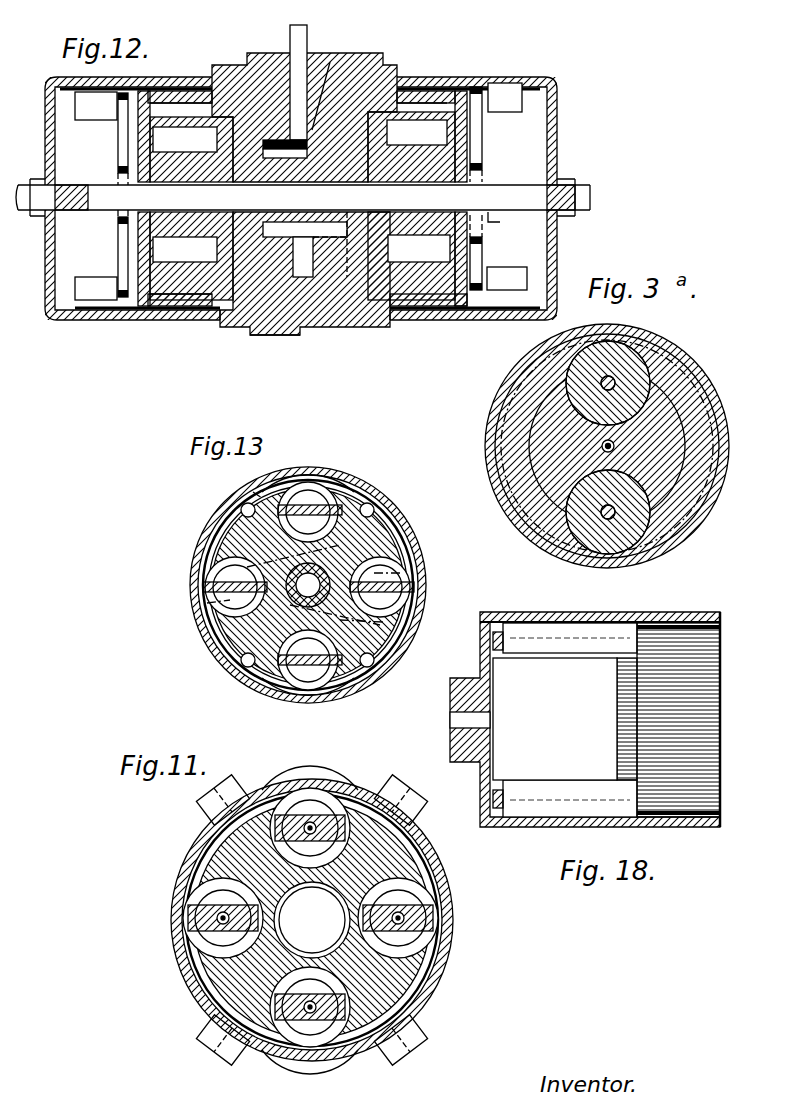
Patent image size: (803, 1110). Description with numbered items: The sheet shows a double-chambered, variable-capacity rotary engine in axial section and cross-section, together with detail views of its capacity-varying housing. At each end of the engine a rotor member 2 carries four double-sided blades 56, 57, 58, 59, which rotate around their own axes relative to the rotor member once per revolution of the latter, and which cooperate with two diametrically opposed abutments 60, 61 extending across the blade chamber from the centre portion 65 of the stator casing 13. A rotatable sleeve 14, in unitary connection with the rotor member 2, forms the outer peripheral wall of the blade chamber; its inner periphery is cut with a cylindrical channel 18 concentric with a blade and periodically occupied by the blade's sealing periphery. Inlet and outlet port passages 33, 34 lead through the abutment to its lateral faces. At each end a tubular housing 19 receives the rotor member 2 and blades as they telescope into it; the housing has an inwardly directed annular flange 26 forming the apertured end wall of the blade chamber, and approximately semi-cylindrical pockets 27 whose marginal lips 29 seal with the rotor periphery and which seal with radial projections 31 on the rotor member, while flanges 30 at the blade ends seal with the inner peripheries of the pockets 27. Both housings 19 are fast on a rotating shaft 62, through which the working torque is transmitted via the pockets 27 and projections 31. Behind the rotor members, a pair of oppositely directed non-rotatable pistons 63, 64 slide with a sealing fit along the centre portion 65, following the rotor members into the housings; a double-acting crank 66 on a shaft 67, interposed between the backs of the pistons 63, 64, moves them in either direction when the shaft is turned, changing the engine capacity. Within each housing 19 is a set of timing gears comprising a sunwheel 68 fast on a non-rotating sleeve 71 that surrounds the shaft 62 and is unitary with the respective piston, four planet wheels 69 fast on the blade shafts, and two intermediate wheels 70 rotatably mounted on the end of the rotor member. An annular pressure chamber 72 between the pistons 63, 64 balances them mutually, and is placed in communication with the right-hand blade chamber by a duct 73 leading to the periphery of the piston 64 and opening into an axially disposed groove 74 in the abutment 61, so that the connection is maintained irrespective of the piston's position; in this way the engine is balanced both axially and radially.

In FIG. 12, the rotor member 2 is at (166, 160).
In FIG. 3A, the rotor member 2 is at (660, 413).
In FIG. 11, the rotor member 2 is at (380, 970).
In FIG. 12, the stator casing 13 is at (373, 64).
In FIG. 13, the stator casing 13 is at (412, 537).
In FIG. 11, the stator casing 13 is at (450, 902).
In FIG. 12, the rotatable sleeve 14 is at (168, 83).
In FIG. 13, the rotatable sleeve 14 is at (423, 557).
In FIG. 18, the rotatable sleeve 14 is at (687, 612).
In FIG. 11, the rotatable sleeve 14 is at (438, 867).
In FIG. 18, the channel 18 is at (718, 615).
In FIG. 12, the tubular housing 19 is at (95, 82).
In FIG. 18, the tubular housing 19 is at (528, 612).
In FIG. 3A, the annular flange 26 is at (672, 367).
In FIG. 13, the annular flange 26 is at (238, 525).
In FIG. 18, the annular flange 26 is at (630, 725).
In FIG. 12, the pocket 27 is at (87, 108).
In FIG. 18, the pocket 27 is at (565, 633).
In FIG. 18, the marginal lip 29 is at (558, 655).
In FIG. 3A, the flange 30 is at (618, 367).
In FIG. 12, the radial projection 31 is at (135, 88).
In FIG. 13, the port passage 33 is at (370, 508).
In FIG. 11, the port passage 33 is at (380, 828).
In FIG. 13, the port passage 34 is at (246, 510).
In FIG. 11, the port passage 34 is at (228, 818).
In FIG. 12, the blade 56 is at (200, 120).
In FIG. 13, the blade 56 is at (306, 505).
In FIG. 11, the blade 56 is at (292, 815).
In FIG. 13, the blade 57 is at (225, 580).
In FIG. 11, the blade 57 is at (203, 917).
In FIG. 12, the blade 58 is at (205, 275).
In FIG. 13, the blade 58 is at (293, 683).
In FIG. 11, the blade 58 is at (295, 1020).
In FIG. 13, the blade 59 is at (413, 588).
In FIG. 11, the blade 59 is at (433, 920).
In FIG. 12, the abutment 60 is at (165, 97).
In FIG. 13, the abutment 60 is at (317, 492).
In FIG. 11, the abutment 60 is at (333, 813).
In FIG. 12, the abutment 61 is at (185, 298).
In FIG. 13, the abutment 61 is at (347, 690).
In FIG. 11, the abutment 61 is at (340, 1033).
In FIG. 12, the rotating shaft 62 is at (501, 207).
In FIG. 12, the piston 63 is at (257, 262).
In FIG. 12, the piston 64 is at (337, 272).
In FIG. 12, the centre portion 65 is at (295, 300).
In FIG. 12, the double-acting crank 66 is at (326, 70).
In FIG. 12, the shaft 67 is at (292, 40).
In FIG. 12, the sunwheel 68 is at (483, 170).
In FIG. 13, the sunwheel 68 is at (383, 622).
In FIG. 12, the planet wheel 69 is at (483, 103).
In FIG. 13, the planet wheel 69 is at (253, 492).
In FIG. 12, the intermediate wheel 70 is at (482, 150).
In FIG. 13, the intermediate wheel 70 is at (305, 585).
In FIG. 12, the non-rotating sleeve 71 is at (158, 230).
In FIG. 12, the annular pressure chamber 72 is at (362, 167).
In FIG. 12, the duct 73 is at (305, 249).
In FIG. 12, the axially disposed groove 74 is at (357, 275).